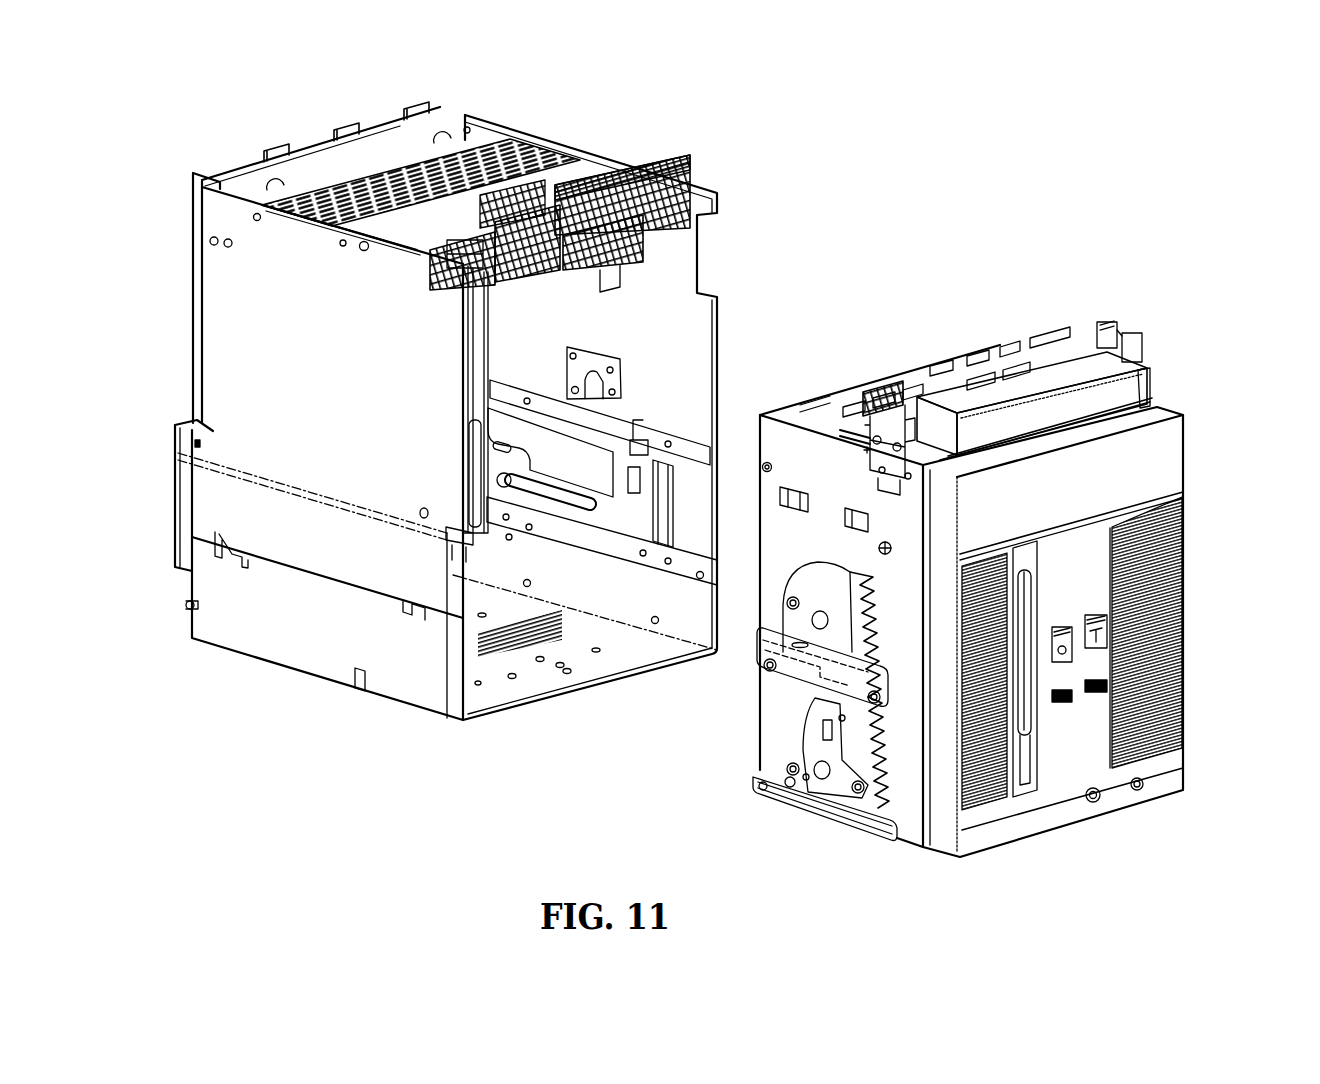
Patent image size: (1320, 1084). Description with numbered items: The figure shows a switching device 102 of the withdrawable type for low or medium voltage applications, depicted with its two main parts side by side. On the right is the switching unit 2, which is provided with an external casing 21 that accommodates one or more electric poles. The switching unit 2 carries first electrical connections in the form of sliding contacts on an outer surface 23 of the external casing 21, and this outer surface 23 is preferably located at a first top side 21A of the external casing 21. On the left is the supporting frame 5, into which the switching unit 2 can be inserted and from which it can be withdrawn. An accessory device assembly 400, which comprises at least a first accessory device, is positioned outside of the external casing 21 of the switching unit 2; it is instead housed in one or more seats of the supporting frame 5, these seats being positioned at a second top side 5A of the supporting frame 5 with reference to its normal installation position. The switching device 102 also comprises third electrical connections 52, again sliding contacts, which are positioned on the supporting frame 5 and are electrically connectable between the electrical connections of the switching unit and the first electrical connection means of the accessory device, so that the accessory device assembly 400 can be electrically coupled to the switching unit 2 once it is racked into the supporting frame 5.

The switching device 102 is at (935, 150).
The supporting frame 5 is at (722, 320).
The second top side 5A is at (580, 156).
The accessory device assembly 400 is at (618, 226).
The third electrical connections 52 is at (622, 264).
The switching unit 2 is at (1172, 396).
The external casing 21 is at (1170, 768).
The first top side 21A is at (1063, 362).
The outer surface 23 is at (938, 390).